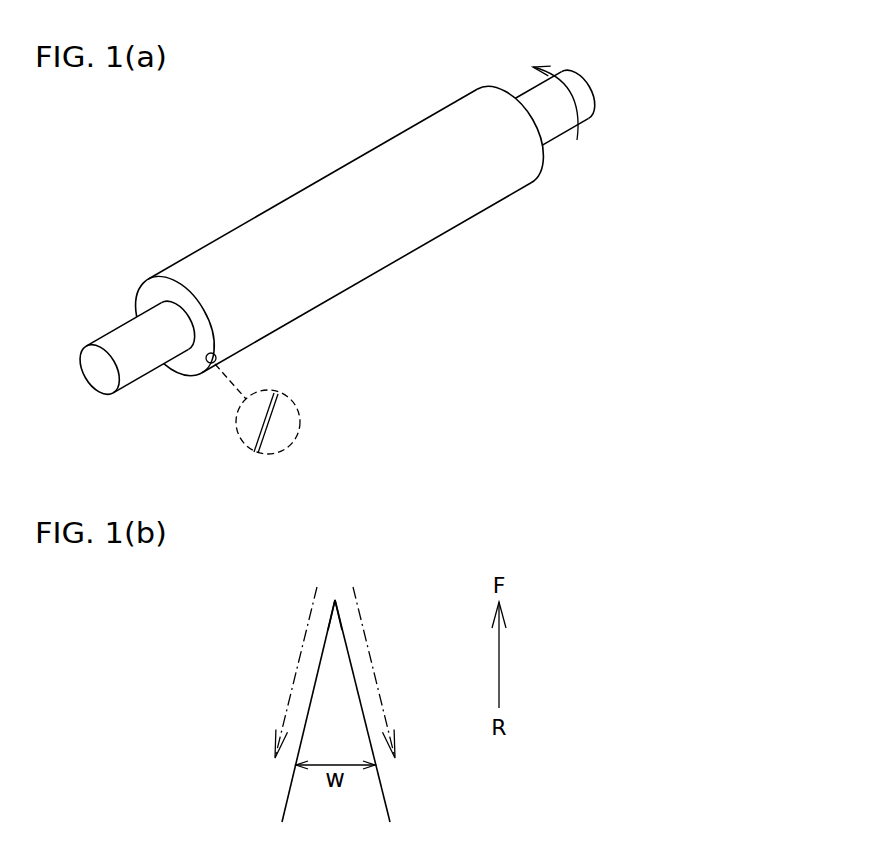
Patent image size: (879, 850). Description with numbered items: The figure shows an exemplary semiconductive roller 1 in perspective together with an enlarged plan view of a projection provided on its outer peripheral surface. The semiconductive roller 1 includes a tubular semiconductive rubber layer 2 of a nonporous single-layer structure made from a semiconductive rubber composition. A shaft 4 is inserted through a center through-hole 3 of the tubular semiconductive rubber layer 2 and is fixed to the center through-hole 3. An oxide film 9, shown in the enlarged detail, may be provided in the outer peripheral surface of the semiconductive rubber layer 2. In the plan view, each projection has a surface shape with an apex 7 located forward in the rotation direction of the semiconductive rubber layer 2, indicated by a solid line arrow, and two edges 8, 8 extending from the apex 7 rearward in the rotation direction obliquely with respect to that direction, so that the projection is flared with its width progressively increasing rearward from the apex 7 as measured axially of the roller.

The semiconductive roller 1 is at (151, 151).
The semiconductive rubber layer 2 is at (378, 274).
The center through-hole 3 is at (177, 356).
The shaft 4 is at (97, 366).
The apex 7 is at (335, 600).
The edges 8 is at (285, 800).
The oxide film 9 is at (272, 417).